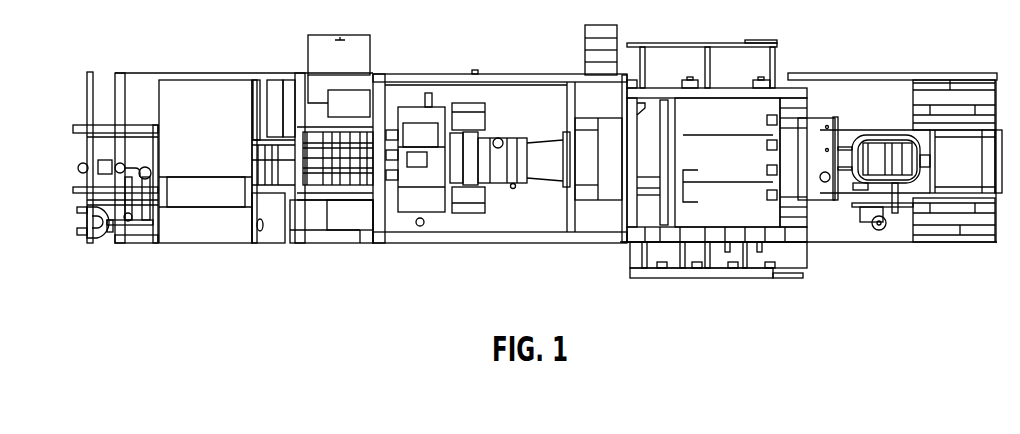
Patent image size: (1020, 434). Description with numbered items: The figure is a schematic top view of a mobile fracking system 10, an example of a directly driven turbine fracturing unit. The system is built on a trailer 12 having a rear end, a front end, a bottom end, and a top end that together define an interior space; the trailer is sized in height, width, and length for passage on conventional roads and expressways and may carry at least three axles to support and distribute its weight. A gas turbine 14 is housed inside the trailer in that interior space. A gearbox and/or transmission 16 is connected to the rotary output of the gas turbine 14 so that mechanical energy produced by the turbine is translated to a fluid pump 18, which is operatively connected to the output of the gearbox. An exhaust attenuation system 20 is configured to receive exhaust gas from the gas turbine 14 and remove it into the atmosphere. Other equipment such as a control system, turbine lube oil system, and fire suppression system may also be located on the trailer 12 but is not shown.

The mobile fracking system 10 is at (400, 70).
The trailer 12 is at (533, 106).
The gas turbine 14 is at (495, 182).
The gearbox and/or transmission 16 is at (422, 177).
The fluid pump 18 is at (223, 216).
The exhaust attenuation system 20 is at (728, 170).